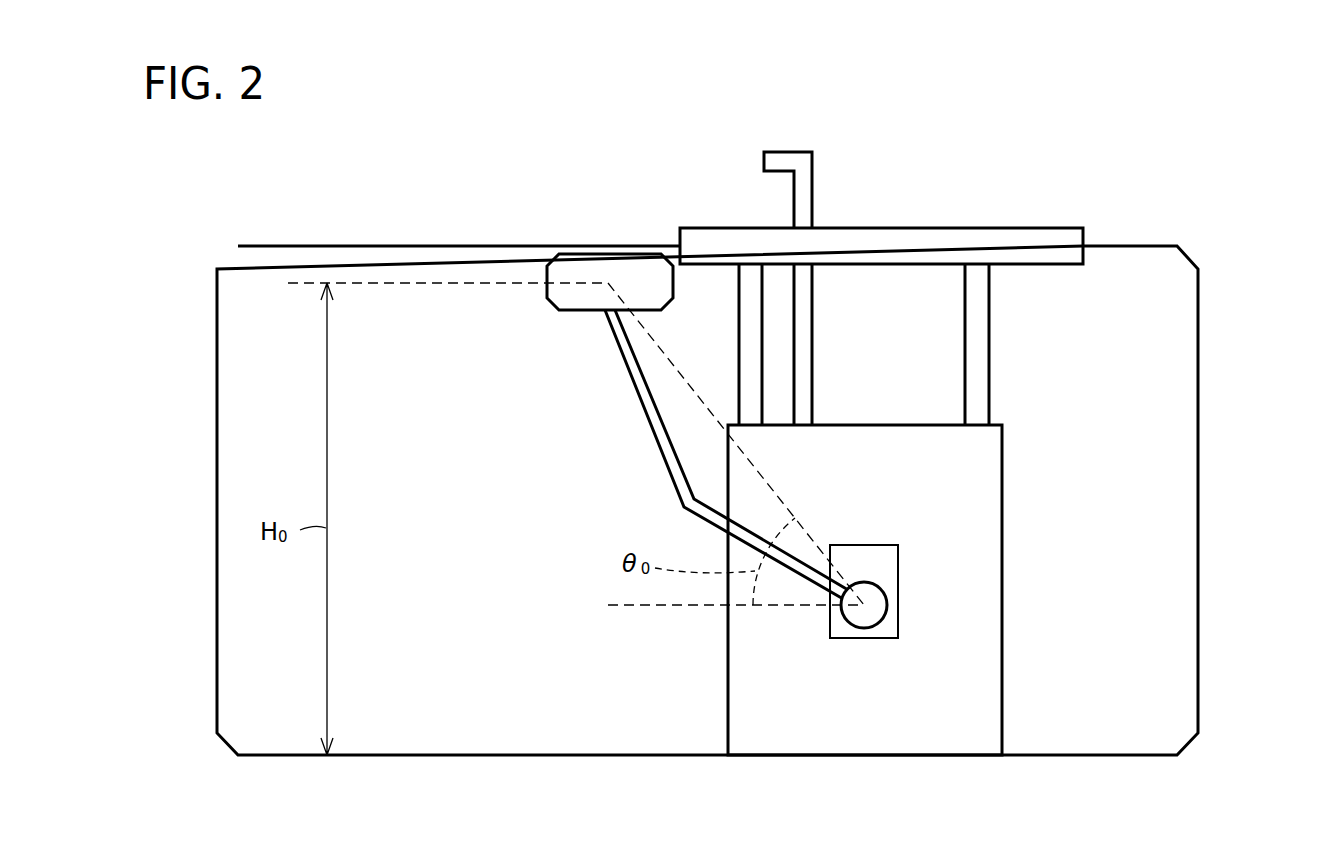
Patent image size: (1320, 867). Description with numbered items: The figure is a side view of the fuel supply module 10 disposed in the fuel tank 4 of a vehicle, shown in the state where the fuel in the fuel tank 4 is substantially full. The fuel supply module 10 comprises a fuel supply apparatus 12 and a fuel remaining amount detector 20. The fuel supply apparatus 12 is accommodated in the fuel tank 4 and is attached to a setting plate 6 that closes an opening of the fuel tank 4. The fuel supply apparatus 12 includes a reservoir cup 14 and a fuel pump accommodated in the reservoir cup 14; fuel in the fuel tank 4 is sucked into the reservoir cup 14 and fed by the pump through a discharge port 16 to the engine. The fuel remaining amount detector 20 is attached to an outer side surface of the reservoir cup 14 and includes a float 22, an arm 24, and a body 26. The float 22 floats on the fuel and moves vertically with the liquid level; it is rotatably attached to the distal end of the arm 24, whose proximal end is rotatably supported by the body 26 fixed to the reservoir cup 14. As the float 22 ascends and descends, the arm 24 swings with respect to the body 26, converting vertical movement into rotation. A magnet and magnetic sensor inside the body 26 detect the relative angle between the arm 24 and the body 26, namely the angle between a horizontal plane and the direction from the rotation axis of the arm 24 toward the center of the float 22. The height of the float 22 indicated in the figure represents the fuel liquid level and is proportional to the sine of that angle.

The fuel tank 4 is at (1198, 347).
The setting plate 6 is at (1053, 228).
The fuel supply module 10 is at (884, 407).
The fuel supply apparatus 12 is at (1036, 437).
The reservoir cup 14 is at (982, 553).
The discharge port 16 is at (783, 157).
The fuel remaining amount detector 20 is at (915, 596).
The float 22 is at (618, 268).
The arm 24 is at (643, 397).
The body 26 is at (898, 632).